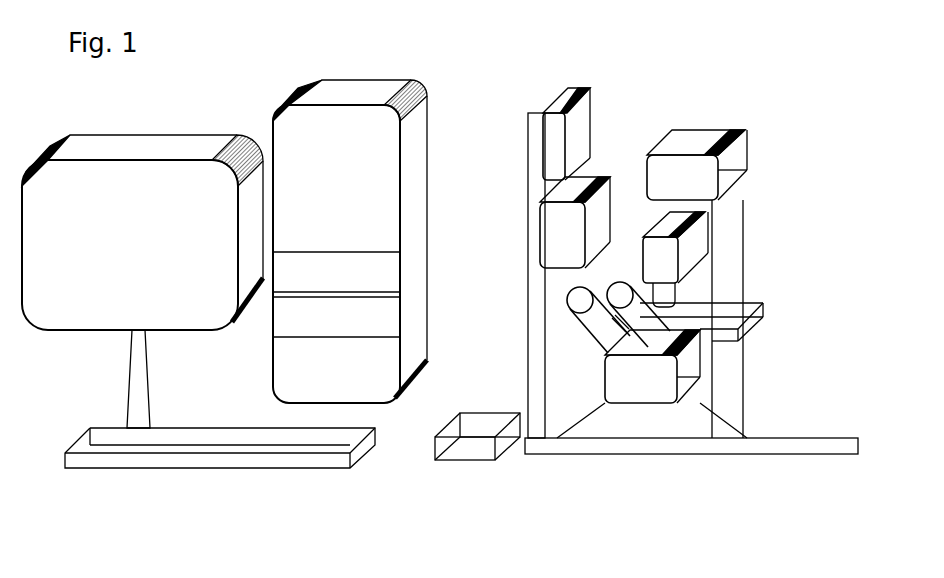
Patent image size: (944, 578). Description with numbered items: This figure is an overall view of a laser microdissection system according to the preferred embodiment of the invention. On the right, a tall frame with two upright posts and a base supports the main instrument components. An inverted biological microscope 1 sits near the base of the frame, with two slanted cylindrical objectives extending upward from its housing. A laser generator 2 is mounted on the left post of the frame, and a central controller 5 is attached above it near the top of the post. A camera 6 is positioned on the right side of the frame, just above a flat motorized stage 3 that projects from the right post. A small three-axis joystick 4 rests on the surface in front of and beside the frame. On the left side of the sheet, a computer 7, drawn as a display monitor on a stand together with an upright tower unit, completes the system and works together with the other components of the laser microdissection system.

The inverted biological microscope 1 is at (640, 393).
The laser generator 2 is at (550, 223).
The motorized stage 3 is at (743, 328).
The three-axis joystick 4 is at (463, 448).
The central controller 5 is at (582, 112).
The camera 6 is at (692, 252).
The computer 7 is at (262, 120).